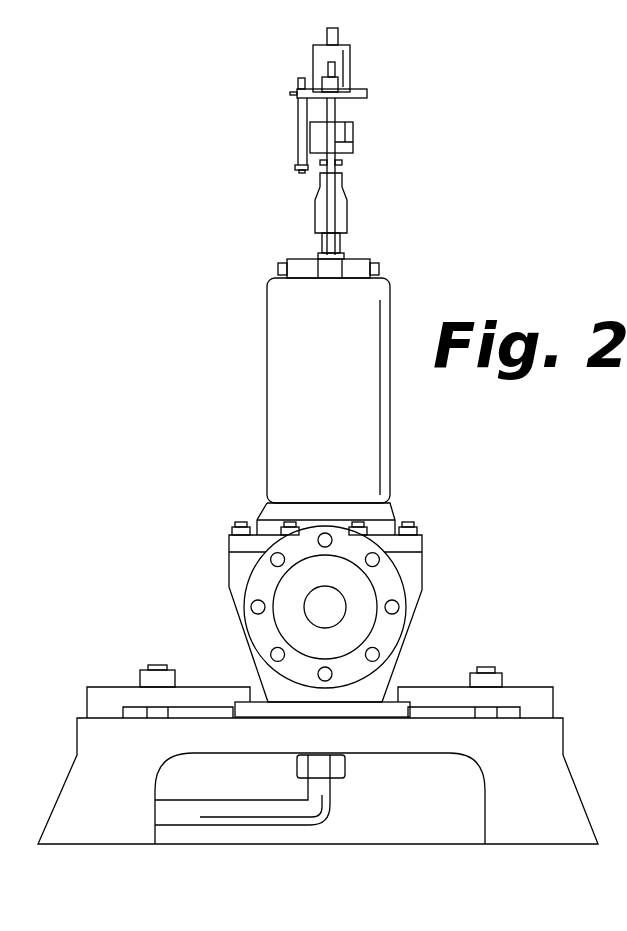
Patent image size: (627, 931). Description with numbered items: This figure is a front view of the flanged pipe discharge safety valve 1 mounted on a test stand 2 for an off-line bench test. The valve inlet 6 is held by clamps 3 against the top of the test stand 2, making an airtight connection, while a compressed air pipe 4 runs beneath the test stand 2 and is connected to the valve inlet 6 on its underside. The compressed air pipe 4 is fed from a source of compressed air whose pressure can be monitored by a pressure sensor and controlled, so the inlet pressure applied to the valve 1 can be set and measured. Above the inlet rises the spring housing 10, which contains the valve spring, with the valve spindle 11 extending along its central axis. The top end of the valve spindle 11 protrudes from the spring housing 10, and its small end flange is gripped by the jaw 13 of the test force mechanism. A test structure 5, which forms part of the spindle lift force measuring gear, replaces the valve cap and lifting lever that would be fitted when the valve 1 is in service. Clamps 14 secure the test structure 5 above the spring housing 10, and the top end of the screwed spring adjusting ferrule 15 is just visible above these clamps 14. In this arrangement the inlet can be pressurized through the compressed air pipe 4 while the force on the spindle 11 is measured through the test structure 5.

The safety valve 1 is at (423, 535).
The test stand 2 is at (558, 793).
The clamps 3 is at (435, 687).
The compressed air pipe 4 is at (288, 810).
The test structure 5 is at (322, 193).
The valve inlet 6 is at (278, 693).
The spring housing 10 is at (288, 398).
The valve spindle 11 is at (320, 252).
The jaw 13 is at (348, 213).
The clamps 14 is at (378, 260).
The spring adjusting ferrule 15 is at (342, 255).